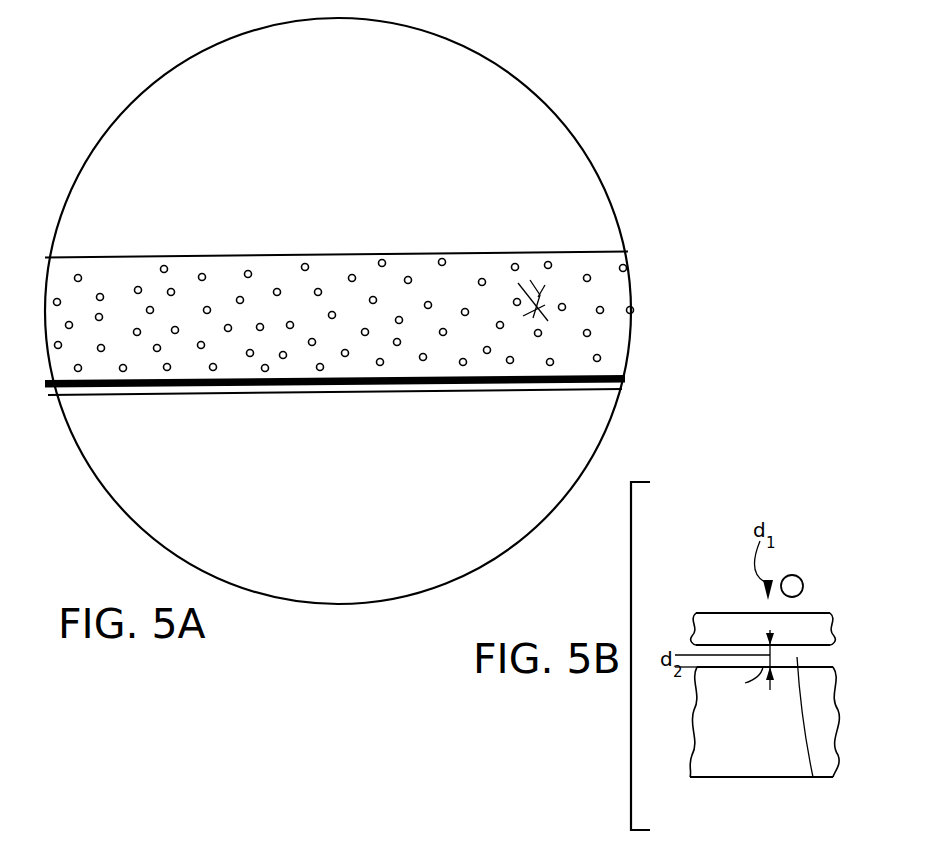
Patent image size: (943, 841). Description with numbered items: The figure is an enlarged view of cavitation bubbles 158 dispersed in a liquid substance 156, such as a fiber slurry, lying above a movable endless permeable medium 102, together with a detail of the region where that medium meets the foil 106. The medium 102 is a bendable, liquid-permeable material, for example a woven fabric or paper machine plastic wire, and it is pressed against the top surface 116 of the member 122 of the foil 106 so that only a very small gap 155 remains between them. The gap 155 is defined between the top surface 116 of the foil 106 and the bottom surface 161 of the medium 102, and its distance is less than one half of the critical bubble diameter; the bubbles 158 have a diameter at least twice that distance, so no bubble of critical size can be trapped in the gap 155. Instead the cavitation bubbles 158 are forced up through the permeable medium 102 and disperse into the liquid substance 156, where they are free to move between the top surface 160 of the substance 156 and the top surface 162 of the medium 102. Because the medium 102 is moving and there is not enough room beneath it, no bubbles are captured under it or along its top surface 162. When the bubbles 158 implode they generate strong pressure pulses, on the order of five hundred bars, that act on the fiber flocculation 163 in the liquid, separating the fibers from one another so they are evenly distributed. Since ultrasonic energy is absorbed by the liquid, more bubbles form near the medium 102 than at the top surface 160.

In FIG. 5A, the movable endless permeable medium 102 is at (339, 322).
In FIG. 5B, the movable endless permeable medium 102 is at (753, 623).
In FIG. 5B, the foil 106 is at (779, 757).
In FIG. 5B, the top surface of the member of the foil 116 is at (745, 683).
In FIG. 5A, the member of the foil 122 is at (155, 445).
In FIG. 5B, the member of the foil 122 is at (727, 733).
In FIG. 5B, the gap 155 is at (813, 777).
In FIG. 5A, the liquid substance 156 is at (457, 283).
In FIG. 5A, the cavitation bubbles 158 is at (302, 264).
In FIG. 5B, the cavitation bubbles 158 is at (792, 586).
In FIG. 5A, the top surface of the liquid substance 160 is at (338, 254).
In FIG. 5B, the bottom surface of the permeable medium 161 is at (826, 652).
In FIG. 5A, the top surface of the medium 162 is at (68, 398).
In FIG. 5B, the top surface of the medium 162 is at (730, 613).
In FIG. 5A, the fiber flocculation 163 is at (544, 290).